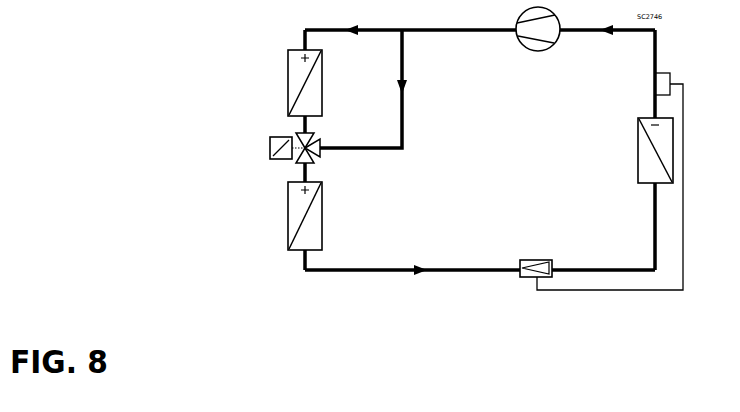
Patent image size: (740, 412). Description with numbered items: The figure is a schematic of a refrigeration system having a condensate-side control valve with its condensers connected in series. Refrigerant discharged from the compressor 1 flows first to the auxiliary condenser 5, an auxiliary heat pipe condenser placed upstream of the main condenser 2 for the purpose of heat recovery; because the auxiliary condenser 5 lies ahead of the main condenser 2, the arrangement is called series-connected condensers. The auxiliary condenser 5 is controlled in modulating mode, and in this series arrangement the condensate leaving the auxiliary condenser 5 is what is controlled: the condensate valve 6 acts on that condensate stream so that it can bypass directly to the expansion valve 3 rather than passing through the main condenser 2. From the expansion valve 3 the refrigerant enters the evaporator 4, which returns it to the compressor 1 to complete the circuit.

The compressor 1 is at (538, 38).
The main condenser 2 is at (311, 216).
The expansion valve 3 is at (536, 262).
The evaporator 4 is at (648, 150).
The auxiliary condenser 5 is at (311, 83).
The condensate valve 6 is at (274, 148).